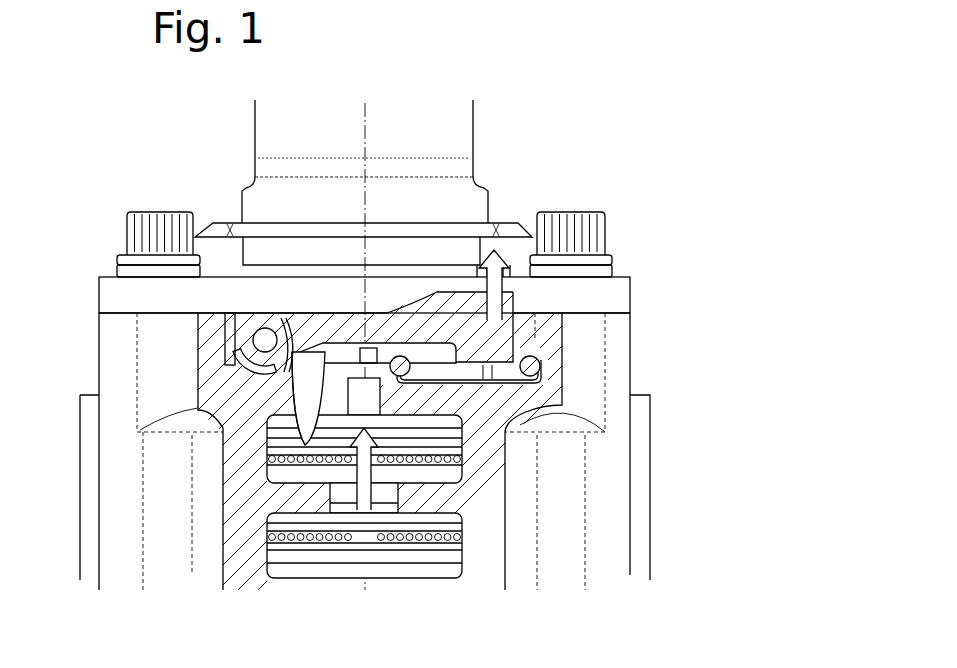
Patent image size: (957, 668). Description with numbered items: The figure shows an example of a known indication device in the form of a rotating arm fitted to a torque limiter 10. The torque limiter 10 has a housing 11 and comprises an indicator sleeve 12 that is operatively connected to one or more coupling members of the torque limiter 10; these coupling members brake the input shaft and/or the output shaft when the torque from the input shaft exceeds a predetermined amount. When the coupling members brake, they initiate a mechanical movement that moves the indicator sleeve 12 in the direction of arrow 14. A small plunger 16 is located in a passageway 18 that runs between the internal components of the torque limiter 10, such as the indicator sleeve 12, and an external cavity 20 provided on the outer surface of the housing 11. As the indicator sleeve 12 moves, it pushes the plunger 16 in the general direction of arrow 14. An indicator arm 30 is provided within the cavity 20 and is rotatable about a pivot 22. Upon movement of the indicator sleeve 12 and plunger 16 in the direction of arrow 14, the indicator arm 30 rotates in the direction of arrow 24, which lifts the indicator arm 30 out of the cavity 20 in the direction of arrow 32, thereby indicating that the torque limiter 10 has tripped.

The torque limiter 10 is at (702, 552).
The housing 11 is at (617, 363).
The indicator sleeve 12 is at (322, 450).
The arrow 14 is at (357, 490).
The plunger 16 is at (300, 407).
The passageway 18 is at (300, 387).
The external cavity 20 is at (337, 345).
The pivot 22 is at (258, 327).
The arrow 24 is at (283, 325).
The indicator arm 30 is at (513, 334).
The arrow 32 is at (498, 252).